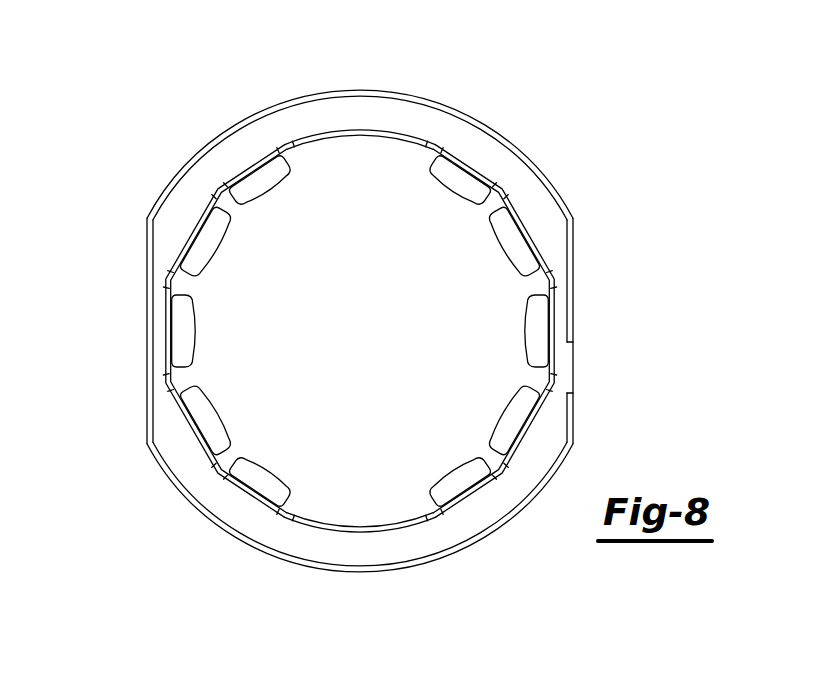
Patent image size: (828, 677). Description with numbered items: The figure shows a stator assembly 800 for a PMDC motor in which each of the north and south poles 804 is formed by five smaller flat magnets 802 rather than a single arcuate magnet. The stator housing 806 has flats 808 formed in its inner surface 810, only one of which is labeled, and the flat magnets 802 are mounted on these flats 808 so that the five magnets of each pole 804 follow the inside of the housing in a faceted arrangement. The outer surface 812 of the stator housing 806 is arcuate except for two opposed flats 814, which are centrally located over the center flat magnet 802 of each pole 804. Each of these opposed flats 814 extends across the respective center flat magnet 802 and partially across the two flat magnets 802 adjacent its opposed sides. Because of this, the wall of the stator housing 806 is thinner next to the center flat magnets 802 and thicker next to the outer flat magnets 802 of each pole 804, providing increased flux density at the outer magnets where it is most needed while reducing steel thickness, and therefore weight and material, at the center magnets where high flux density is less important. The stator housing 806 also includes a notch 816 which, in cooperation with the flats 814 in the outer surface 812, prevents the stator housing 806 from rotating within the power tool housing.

The stator assembly 800 is at (366, 315).
The flat magnets 802 is at (260, 195).
The poles 804 is at (443, 324).
The stator housing 806 is at (352, 110).
The flats 808 is at (433, 495).
The inner surface 810 is at (337, 136).
The outer surface 812 is at (246, 119).
The opposed flats 814 is at (147, 337).
The notch 816 is at (570, 393).